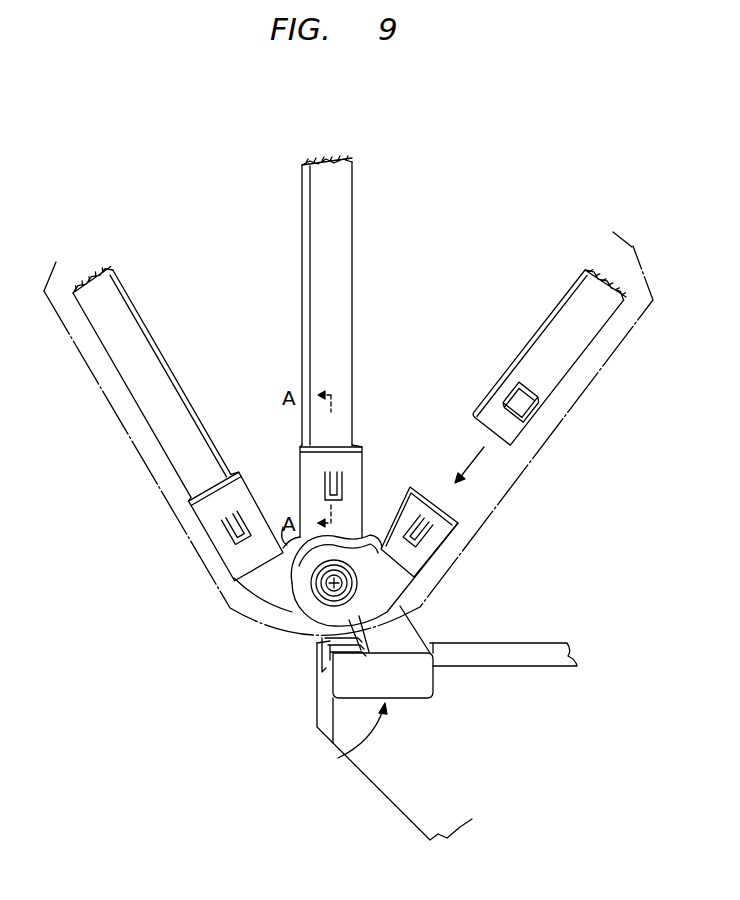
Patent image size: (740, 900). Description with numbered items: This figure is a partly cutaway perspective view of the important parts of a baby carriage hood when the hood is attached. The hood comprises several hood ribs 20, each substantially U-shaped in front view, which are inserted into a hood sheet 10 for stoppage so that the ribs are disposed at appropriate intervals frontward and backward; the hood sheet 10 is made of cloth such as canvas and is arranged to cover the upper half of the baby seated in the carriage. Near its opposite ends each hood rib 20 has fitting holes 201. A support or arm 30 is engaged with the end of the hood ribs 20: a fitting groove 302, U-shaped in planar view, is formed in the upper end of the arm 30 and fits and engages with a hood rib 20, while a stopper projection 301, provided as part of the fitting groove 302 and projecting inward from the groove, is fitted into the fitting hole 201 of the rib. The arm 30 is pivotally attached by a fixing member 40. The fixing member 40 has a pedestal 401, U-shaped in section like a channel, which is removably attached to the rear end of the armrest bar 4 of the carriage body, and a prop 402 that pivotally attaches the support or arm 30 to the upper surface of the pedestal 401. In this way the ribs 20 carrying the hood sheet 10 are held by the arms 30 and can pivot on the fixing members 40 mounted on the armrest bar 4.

The hood sheet 10 is at (668, 241).
The hood rib 20 is at (118, 298).
The fitting hole 201 is at (520, 403).
The support or arm 30 is at (256, 583).
The stopper projection 301 is at (232, 530).
The fitting groove 302 is at (410, 557).
The armrest bar 4 is at (488, 758).
The fixing member 40 is at (338, 758).
The pedestal 401 is at (372, 660).
The prop 402 is at (373, 637).